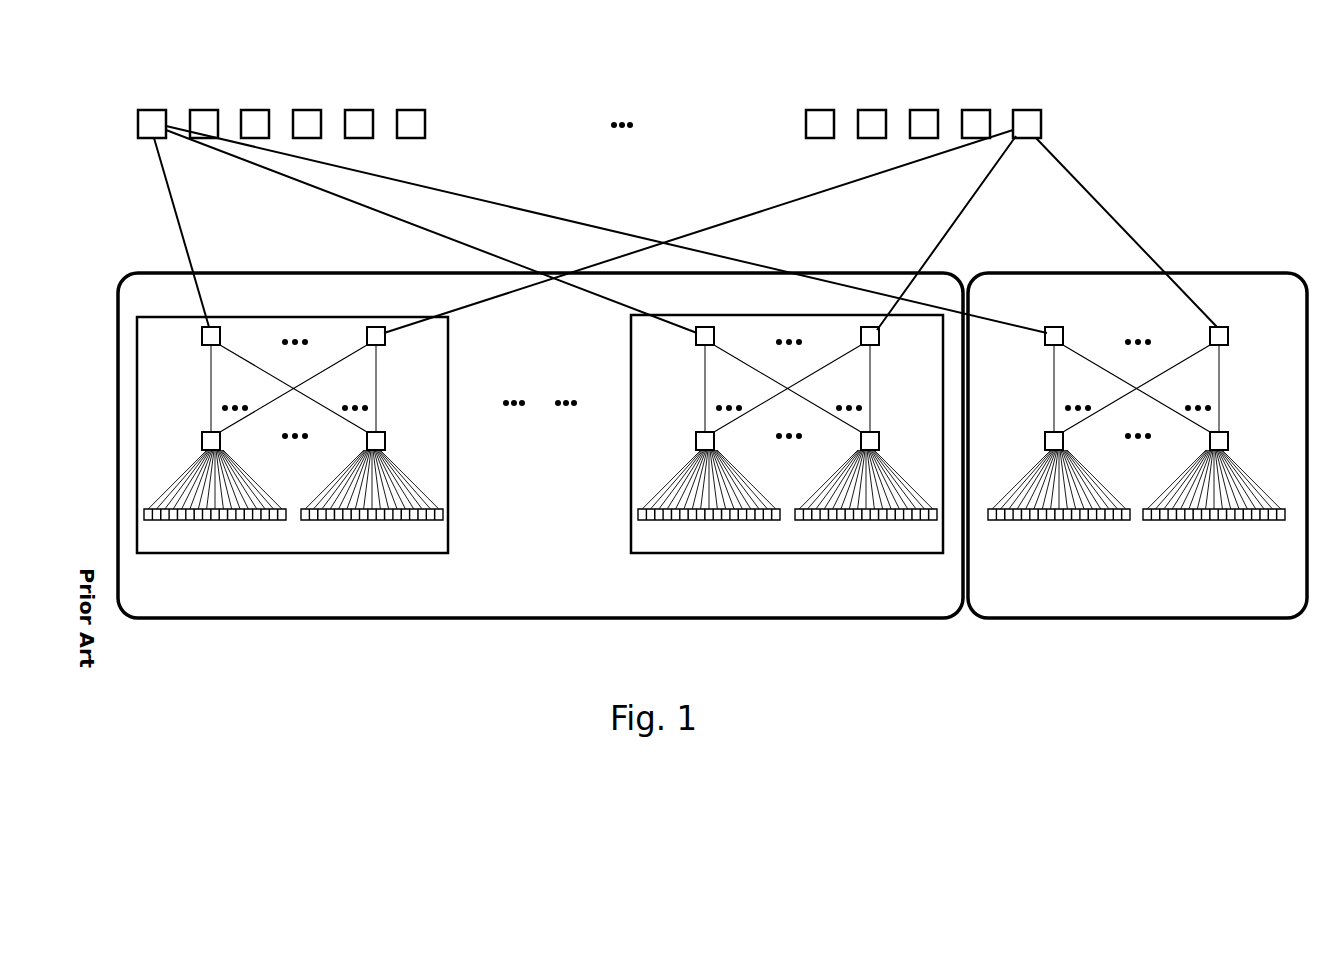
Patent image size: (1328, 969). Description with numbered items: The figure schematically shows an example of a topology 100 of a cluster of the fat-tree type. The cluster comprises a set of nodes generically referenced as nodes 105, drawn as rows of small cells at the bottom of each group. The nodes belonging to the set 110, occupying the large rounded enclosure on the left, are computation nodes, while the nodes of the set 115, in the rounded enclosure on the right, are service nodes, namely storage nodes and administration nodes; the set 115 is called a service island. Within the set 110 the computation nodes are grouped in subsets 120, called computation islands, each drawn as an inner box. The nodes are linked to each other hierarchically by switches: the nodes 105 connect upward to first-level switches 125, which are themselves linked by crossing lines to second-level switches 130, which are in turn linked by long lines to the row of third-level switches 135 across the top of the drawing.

The topology 100 is at (1166, 81).
The nodes 105 is at (208, 521).
The set of computation nodes 110 is at (328, 620).
The set of service nodes 115 is at (1133, 620).
The subsets 120 is at (815, 554).
The first-level switches 125 is at (879, 443).
The second-level switches 130 is at (879, 335).
The third-level switches 135 is at (1028, 107).